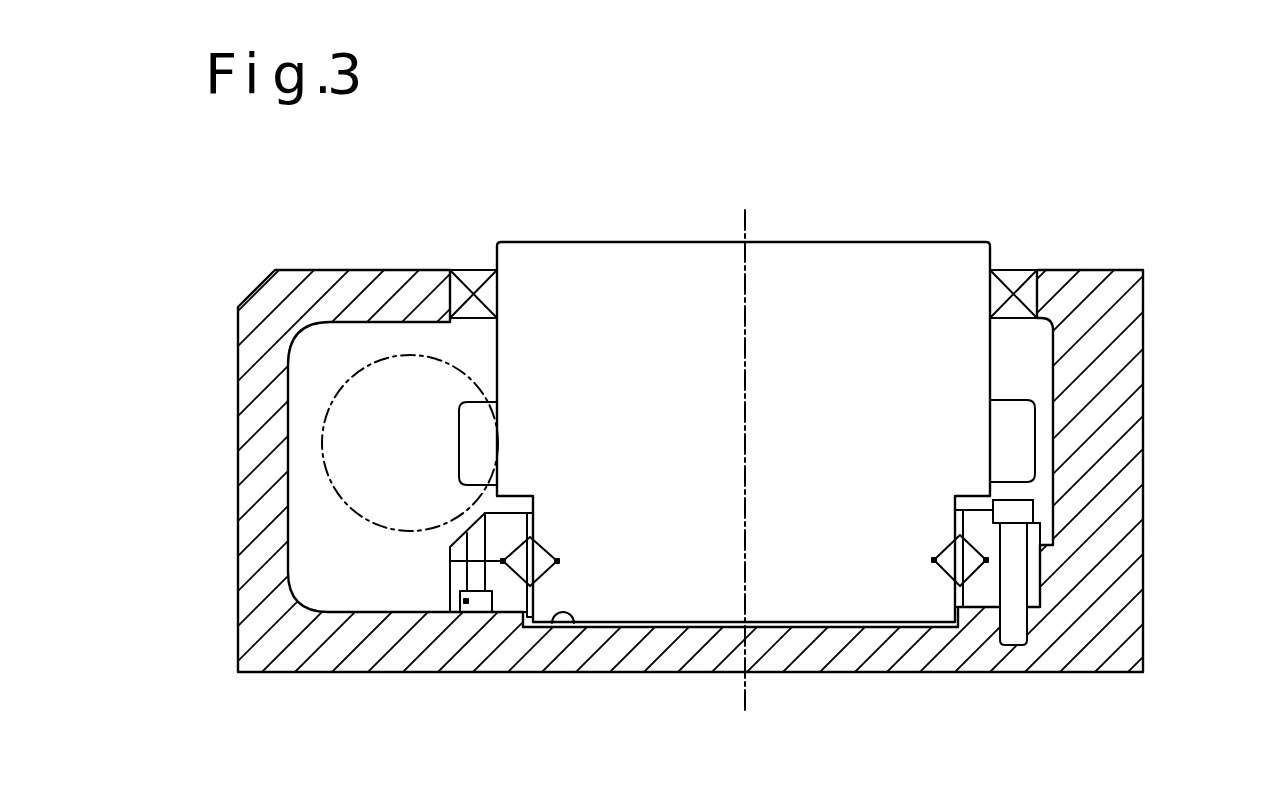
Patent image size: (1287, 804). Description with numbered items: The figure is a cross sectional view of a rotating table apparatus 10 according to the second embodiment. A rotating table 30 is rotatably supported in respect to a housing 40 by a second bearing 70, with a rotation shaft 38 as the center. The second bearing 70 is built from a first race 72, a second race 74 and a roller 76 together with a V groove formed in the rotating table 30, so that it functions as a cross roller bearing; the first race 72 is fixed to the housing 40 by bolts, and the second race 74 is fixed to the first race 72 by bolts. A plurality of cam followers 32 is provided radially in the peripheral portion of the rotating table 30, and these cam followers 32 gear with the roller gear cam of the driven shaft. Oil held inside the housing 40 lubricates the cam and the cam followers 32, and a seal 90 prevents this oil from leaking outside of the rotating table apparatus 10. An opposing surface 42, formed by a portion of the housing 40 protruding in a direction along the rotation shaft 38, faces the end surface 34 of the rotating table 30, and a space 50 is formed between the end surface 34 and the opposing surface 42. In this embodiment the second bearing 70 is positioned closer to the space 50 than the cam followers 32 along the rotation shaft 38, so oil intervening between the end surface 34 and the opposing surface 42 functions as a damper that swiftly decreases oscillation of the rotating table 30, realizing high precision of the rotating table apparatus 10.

The rotating table apparatus 10 is at (1112, 190).
The rotating table 30 is at (645, 262).
The cam followers 32 is at (475, 442).
The end surface 34 is at (570, 620).
The rotation shaft 38 is at (750, 215).
The housing 40 is at (1128, 298).
The opposing surface 42 is at (698, 628).
The space 50 is at (640, 628).
The second bearing 70 is at (861, 572).
The first race 72 is at (990, 587).
The second race 74 is at (990, 538).
The roller 76 is at (987, 559).
The seal 90 is at (1012, 270).